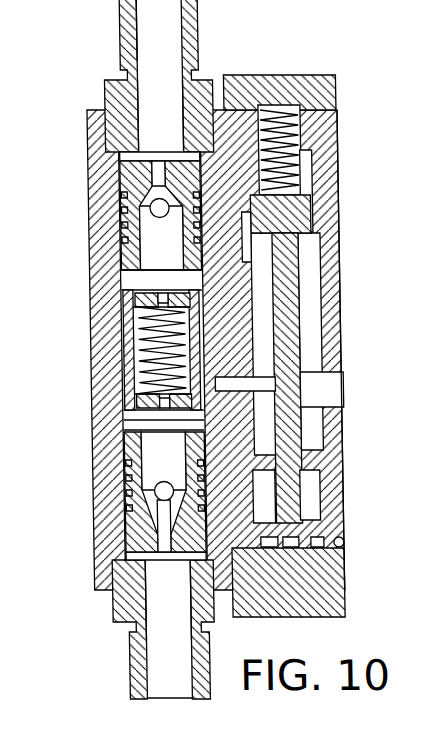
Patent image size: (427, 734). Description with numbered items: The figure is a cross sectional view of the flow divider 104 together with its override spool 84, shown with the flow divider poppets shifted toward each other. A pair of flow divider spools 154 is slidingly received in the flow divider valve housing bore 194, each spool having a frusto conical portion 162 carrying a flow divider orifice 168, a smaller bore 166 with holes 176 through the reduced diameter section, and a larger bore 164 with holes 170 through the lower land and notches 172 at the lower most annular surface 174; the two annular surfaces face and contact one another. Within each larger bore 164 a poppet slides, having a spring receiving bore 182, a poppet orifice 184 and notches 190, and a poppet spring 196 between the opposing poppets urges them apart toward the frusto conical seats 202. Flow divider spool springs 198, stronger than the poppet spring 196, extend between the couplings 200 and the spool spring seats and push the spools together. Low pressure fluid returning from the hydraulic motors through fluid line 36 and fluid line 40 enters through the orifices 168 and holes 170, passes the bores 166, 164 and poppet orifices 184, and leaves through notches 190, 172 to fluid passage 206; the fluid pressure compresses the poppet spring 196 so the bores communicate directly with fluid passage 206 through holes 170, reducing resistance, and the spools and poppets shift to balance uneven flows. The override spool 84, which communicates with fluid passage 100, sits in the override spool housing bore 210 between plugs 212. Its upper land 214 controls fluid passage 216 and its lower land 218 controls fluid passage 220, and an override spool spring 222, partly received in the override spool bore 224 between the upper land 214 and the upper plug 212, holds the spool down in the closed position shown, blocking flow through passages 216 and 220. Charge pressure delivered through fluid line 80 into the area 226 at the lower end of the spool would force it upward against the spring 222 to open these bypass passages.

The fluid line 36 is at (152, 32).
The fluid line 40 is at (184, 688).
The fluid line 80 is at (323, 549).
The override spool 84 is at (314, 196).
The fluid passage 100 is at (320, 395).
The flow divider 104 is at (122, 465).
The flow divider spool 154 is at (122, 183).
The frusto conical portion 162 is at (158, 160).
The larger bore 164 is at (122, 270).
The smaller bore 166 is at (123, 240).
The flow divider orifice 168 is at (176, 130).
The holes 170 is at (135, 300).
The notches 172 is at (140, 308).
The lower most annular surface 174 is at (138, 360).
The holes 176 is at (123, 225).
The spring receiving bore 182 is at (122, 420).
The poppet orifice 184 is at (206, 272).
The notches 190 is at (123, 352).
The flow divider valve housing bore 194 is at (163, 348).
The poppet spring 196 is at (215, 384).
The flow divider spool spring 198 is at (122, 154).
The coupling 200 is at (198, 12).
The frusto conical seat 202 is at (122, 290).
The fluid passage 206 is at (270, 378).
The override spool housing bore 210 is at (328, 262).
The plug 212 is at (288, 75).
The upper land 214 is at (322, 226).
The fluid passage 216 is at (246, 255).
The lower land 218 is at (320, 458).
The fluid passage 220 is at (341, 541).
The override spool spring 222 is at (318, 152).
The override spool bore 224 is at (320, 178).
The area 226 is at (330, 588).